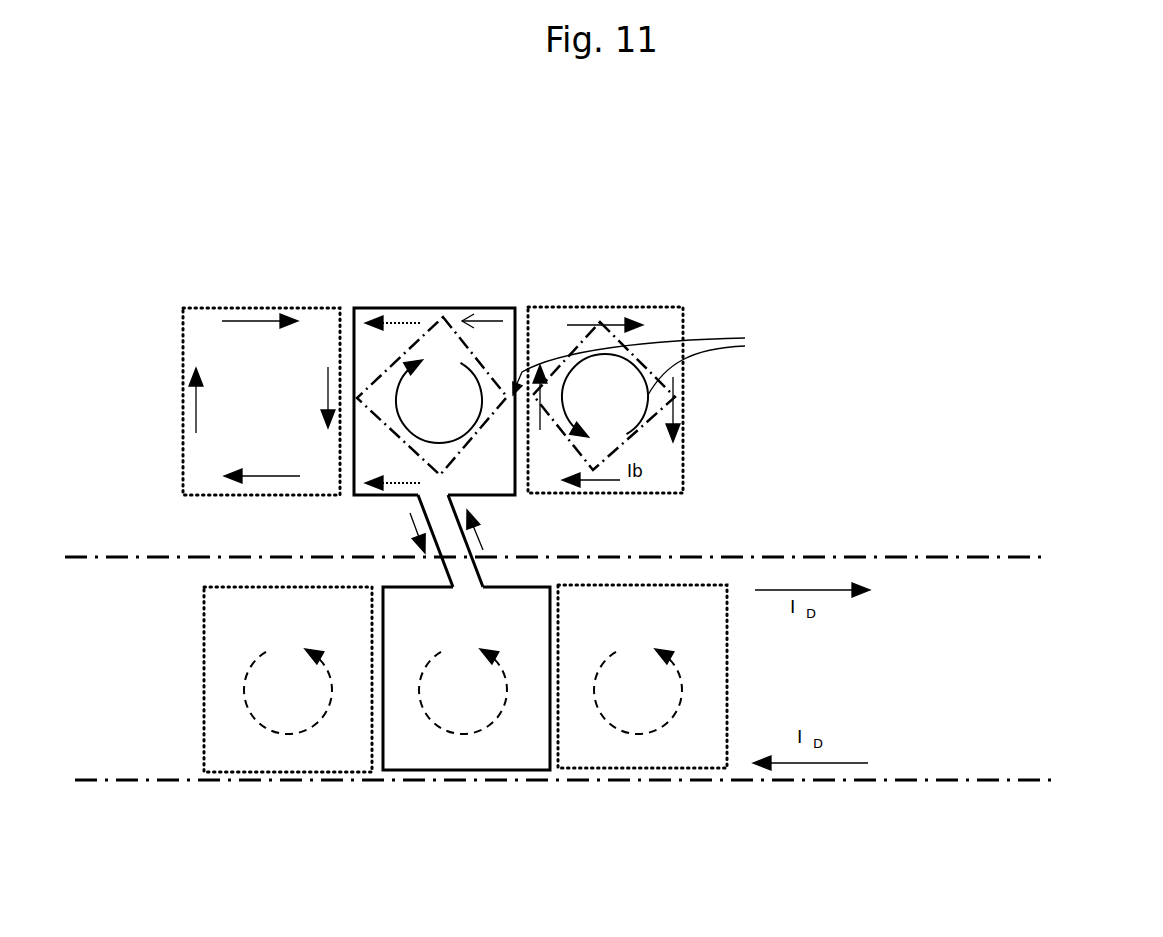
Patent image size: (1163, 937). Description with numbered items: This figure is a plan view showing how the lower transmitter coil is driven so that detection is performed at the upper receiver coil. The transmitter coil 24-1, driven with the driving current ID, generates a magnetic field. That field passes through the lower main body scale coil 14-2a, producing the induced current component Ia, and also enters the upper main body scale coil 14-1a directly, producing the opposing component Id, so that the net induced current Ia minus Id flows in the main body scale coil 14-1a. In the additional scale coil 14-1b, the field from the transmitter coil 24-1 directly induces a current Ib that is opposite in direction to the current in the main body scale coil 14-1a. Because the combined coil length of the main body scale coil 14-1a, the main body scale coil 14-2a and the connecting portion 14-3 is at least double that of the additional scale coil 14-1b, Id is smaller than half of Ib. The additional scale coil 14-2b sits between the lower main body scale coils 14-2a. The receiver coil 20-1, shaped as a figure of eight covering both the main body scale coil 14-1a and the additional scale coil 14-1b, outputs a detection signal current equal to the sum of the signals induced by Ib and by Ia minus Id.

The additional scale coil 14-1b is at (290, 308).
The main body scale coil 14-1a is at (425, 308).
The receiver coil 20-1 is at (645, 348).
The transmitter coil 24-1 is at (1000, 777).
The scale coil connecting portion 14-3 is at (478, 543).
The additional scale coil 14-2b is at (312, 772).
The main body scale coil 14-2a is at (393, 772).